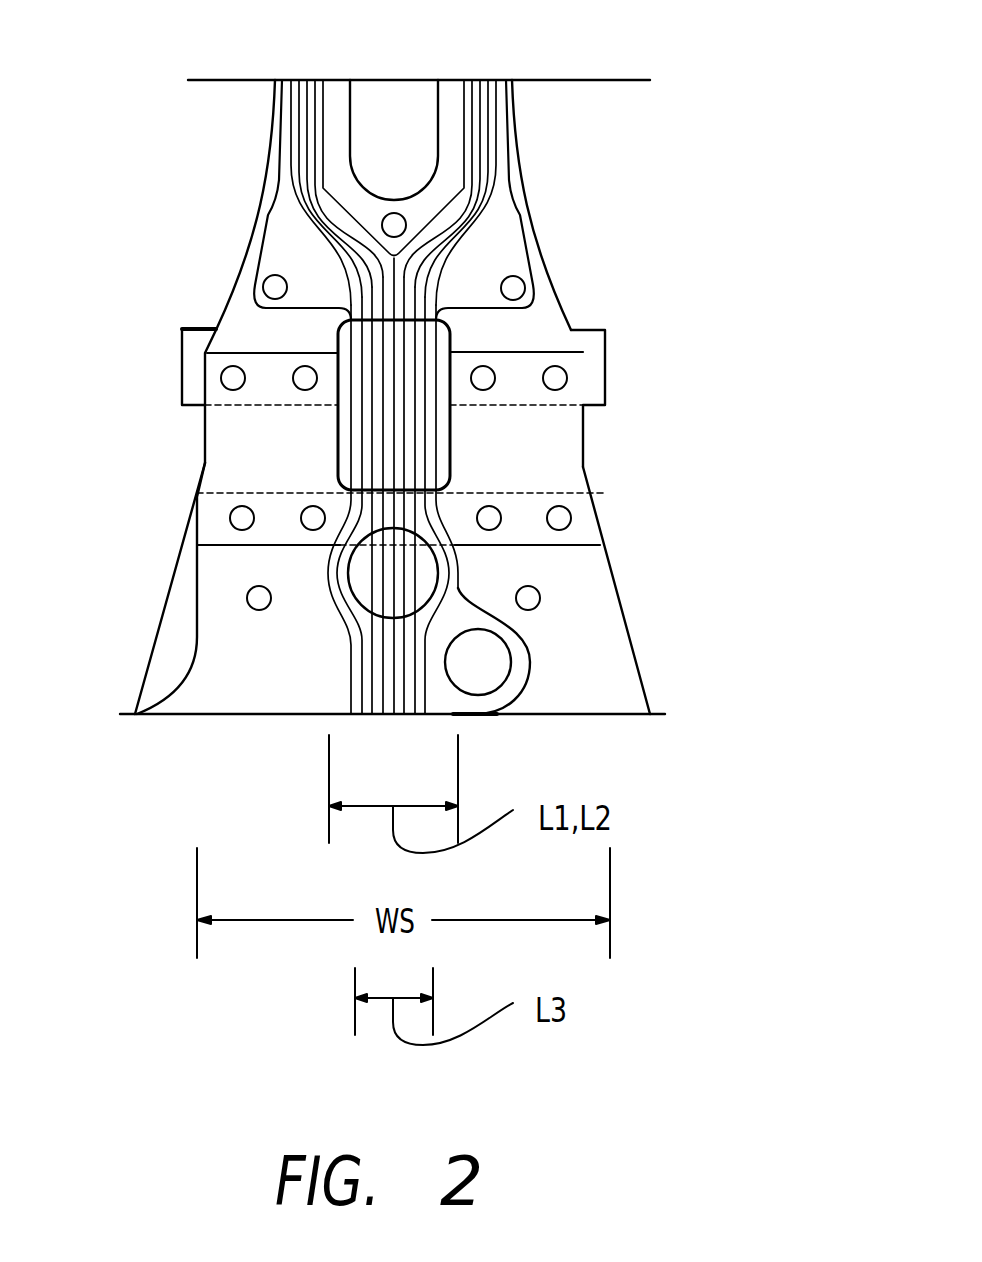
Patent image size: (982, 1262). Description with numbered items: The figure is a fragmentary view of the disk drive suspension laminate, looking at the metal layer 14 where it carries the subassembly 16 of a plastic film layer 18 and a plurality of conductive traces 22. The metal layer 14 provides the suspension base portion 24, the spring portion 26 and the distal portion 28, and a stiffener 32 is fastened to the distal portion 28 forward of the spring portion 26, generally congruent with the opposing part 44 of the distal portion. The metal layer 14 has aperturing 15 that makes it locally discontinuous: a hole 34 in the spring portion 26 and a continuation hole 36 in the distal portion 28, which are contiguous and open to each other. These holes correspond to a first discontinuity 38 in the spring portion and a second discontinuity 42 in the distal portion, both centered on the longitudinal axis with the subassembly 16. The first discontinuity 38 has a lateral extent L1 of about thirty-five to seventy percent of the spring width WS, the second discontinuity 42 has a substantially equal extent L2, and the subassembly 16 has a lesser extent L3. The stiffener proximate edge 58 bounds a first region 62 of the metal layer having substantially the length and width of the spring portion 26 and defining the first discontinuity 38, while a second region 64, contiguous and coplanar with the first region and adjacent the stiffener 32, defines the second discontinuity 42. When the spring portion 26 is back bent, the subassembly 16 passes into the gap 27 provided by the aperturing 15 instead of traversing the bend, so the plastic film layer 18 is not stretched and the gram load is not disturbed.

The metal layer 14 is at (515, 258).
The aperturing 15 is at (443, 343).
The subassembly 16 is at (397, 665).
The plastic film layer 18 is at (433, 657).
The conductive traces 22 is at (463, 228).
The suspension base portion 24 is at (222, 695).
The spring portion 26 is at (204, 430).
The gap 27 is at (343, 397).
The distal portion 28 is at (517, 118).
The stiffener 32 is at (248, 243).
The hole 34 is at (438, 472).
The continuation hole 36 is at (443, 385).
The first discontinuity 38 is at (338, 435).
The second discontinuity 42 is at (343, 345).
The opposing part of the distal portion 44 is at (270, 207).
The stiffener proximate edge 58 is at (605, 406).
The first region 62 is at (585, 438).
The second region 64 is at (563, 395).